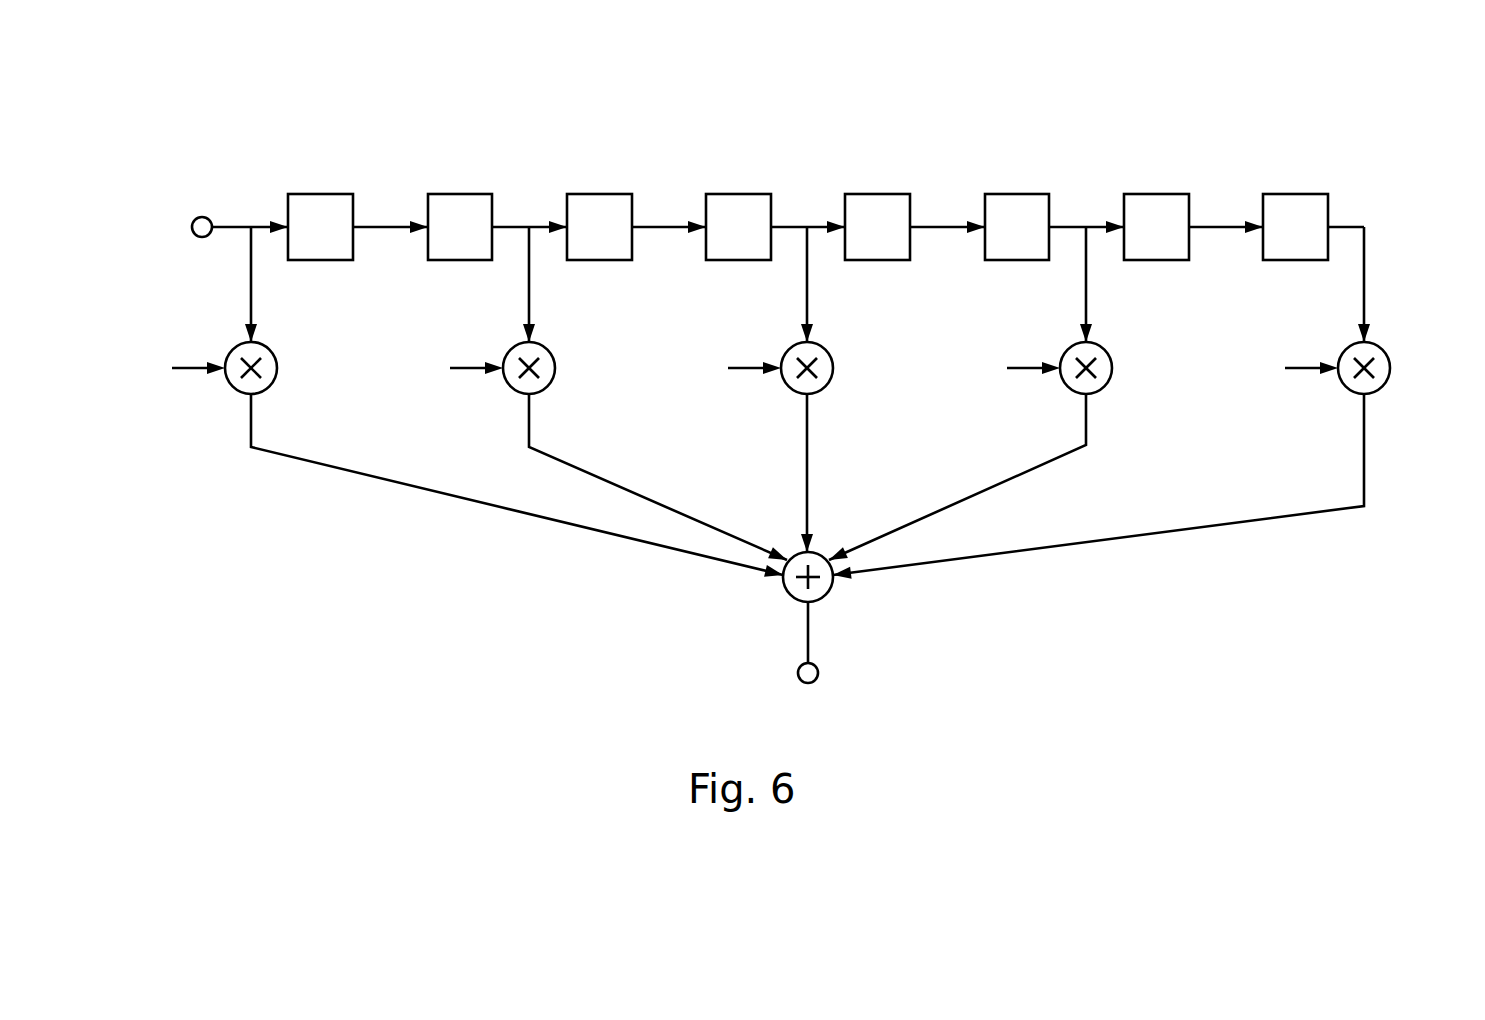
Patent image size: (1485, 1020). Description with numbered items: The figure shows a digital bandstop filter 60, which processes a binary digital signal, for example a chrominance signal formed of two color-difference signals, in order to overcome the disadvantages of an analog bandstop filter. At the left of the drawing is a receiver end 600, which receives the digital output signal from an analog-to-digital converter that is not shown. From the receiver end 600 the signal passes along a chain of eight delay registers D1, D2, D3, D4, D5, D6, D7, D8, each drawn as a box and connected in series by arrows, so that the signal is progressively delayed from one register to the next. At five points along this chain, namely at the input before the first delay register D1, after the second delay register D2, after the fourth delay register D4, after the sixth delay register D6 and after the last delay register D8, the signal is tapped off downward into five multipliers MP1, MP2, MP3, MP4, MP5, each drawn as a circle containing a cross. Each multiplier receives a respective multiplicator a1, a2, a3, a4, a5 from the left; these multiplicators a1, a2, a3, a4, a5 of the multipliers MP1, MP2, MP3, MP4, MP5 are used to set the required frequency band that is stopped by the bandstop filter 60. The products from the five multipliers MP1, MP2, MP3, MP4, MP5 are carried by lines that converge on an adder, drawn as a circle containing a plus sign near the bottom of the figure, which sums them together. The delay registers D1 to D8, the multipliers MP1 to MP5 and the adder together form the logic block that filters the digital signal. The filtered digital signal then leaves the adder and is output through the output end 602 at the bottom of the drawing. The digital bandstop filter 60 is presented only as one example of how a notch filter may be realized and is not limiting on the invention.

The digital bandstop filter 60 is at (1156, 112).
The receiver end 600 is at (208, 219).
The output end 602 is at (818, 669).
The delay register D1 is at (320, 227).
The delay register D2 is at (460, 227).
The delay register D3 is at (599, 227).
The delay register D4 is at (738, 227).
The delay register D5 is at (877, 227).
The delay register D6 is at (1017, 227).
The delay register D7 is at (1156, 227).
The delay register D8 is at (1295, 227).
The multiplier MP1 is at (262, 340).
The multiplier MP2 is at (540, 340).
The multiplier MP3 is at (818, 340).
The multiplier MP4 is at (1097, 340).
The multiplier MP5 is at (1375, 340).
The multiplicator a1 is at (183, 367).
The multiplicator a2 is at (461, 367).
The multiplicator a3 is at (739, 367).
The multiplicator a4 is at (1018, 367).
The multiplicator a5 is at (1296, 367).